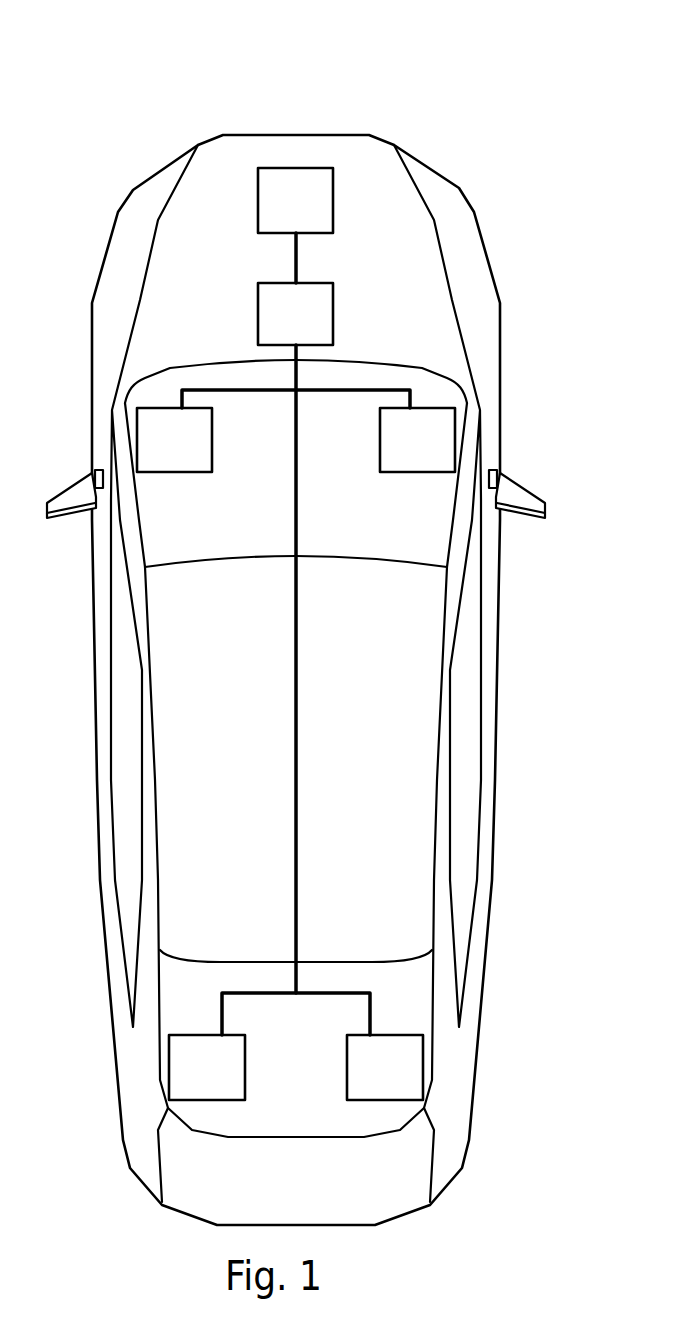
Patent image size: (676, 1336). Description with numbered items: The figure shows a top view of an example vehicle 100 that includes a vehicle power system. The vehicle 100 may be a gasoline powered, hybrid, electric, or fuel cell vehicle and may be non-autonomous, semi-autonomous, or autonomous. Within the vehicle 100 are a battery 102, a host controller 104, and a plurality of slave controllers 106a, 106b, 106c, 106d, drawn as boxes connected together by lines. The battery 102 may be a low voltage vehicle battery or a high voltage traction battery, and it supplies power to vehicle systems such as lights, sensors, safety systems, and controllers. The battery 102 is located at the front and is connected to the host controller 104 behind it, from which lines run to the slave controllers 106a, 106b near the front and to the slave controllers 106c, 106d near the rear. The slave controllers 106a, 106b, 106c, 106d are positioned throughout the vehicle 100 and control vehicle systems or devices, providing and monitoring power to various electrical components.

The vehicle 100 is at (198, 145).
The battery 102 is at (277, 211).
The host controller 104 is at (277, 325).
The slave controller 106a is at (149, 451).
The slave controller 106b is at (392, 451).
The slave controller 106c is at (181, 1078).
The slave controller 106d is at (359, 1078).